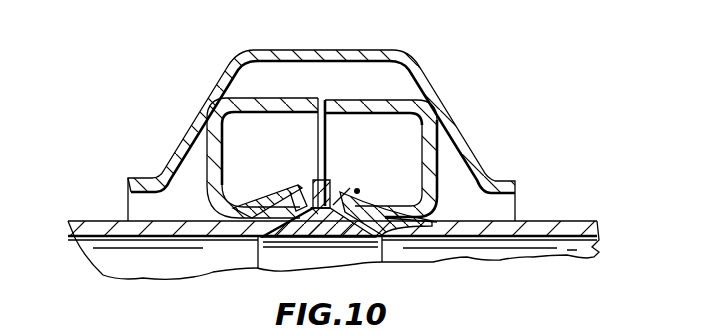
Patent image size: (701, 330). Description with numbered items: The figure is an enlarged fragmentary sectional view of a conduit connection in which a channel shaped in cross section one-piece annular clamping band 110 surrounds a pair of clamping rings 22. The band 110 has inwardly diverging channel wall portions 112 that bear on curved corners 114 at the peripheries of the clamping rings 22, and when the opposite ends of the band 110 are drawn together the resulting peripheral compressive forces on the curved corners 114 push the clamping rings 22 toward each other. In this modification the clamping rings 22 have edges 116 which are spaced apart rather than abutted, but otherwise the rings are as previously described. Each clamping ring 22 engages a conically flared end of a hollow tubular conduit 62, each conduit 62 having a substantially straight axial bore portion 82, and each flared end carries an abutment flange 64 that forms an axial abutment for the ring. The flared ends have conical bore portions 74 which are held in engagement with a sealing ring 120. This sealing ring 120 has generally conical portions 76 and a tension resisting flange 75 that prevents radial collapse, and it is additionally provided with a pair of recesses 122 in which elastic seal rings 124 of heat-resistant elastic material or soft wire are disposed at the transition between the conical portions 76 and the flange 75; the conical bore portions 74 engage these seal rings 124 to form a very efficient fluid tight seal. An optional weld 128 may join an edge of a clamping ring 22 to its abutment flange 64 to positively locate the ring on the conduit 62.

The clamping ring 22 is at (297, 108).
The hollow tubular conduit 62 is at (205, 240).
The abutment flange 64 is at (290, 187).
The conical bore portion 74 is at (284, 239).
The tension resisting flange 75 is at (322, 186).
The conical portion 76 is at (428, 217).
The axial bore portion 82 is at (153, 237).
The clamping band 110 is at (185, 133).
The channel wall portion 112 is at (205, 108).
The curved corner 114 is at (205, 100).
The edge 116 is at (300, 114).
The sealing ring 120 is at (328, 240).
The recess 122 is at (333, 207).
The elastic seal ring 124 is at (293, 192).
The weld 128 is at (360, 191).